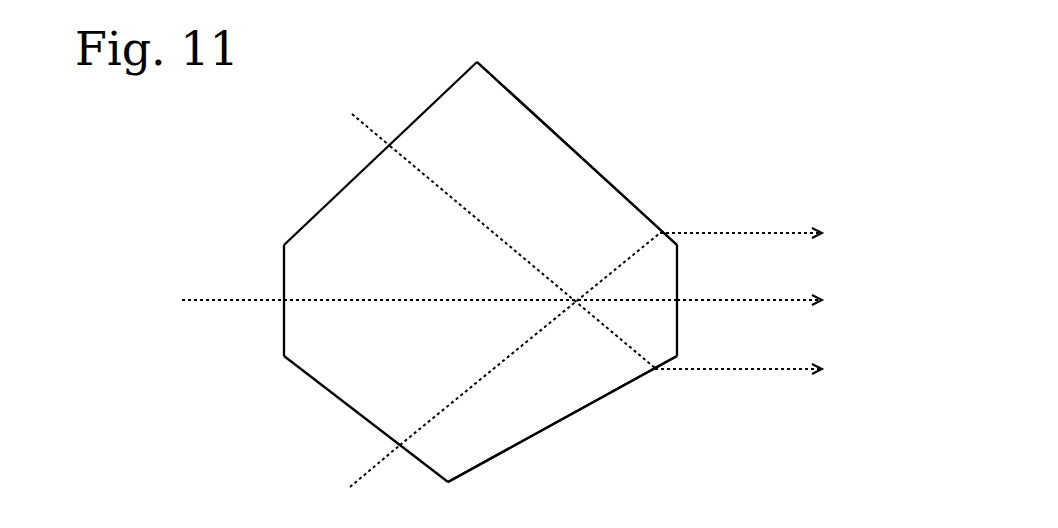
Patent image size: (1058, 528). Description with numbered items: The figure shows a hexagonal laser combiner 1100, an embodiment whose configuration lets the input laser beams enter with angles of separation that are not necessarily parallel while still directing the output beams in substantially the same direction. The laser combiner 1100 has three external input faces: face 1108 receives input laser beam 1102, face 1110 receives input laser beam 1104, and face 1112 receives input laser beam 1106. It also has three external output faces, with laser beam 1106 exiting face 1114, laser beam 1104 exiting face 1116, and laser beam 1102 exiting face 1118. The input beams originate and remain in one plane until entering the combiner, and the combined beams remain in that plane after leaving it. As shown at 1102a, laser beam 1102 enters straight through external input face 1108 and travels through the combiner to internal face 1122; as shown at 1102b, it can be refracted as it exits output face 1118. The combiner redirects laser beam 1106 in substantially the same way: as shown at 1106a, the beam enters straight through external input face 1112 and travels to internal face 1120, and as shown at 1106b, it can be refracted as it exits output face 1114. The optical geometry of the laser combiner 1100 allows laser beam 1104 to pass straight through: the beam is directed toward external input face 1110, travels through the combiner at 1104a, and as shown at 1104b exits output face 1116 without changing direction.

The hexagonal laser combiner 1100 is at (656, 80).
The input laser beam 1102 is at (358, 122).
The laser beam internal path 1102a is at (476, 220).
The refracted output laser beam 1102b is at (748, 371).
The input laser beam 1104 is at (200, 300).
The laser beam internal path 1104a is at (441, 300).
The output laser beam 1104b is at (748, 300).
The input laser beam 1106 is at (358, 482).
The laser beam internal path 1106a is at (477, 383).
The refracted output laser beam 1106b is at (748, 233).
The external input face 1108 is at (341, 192).
The external input face 1110 is at (283, 323).
The external input face 1112 is at (342, 402).
The output face 1114 is at (532, 112).
The output face 1116 is at (680, 315).
The output face 1118 is at (499, 455).
The internal face 1120 is at (562, 141).
The internal face 1122 is at (533, 436).